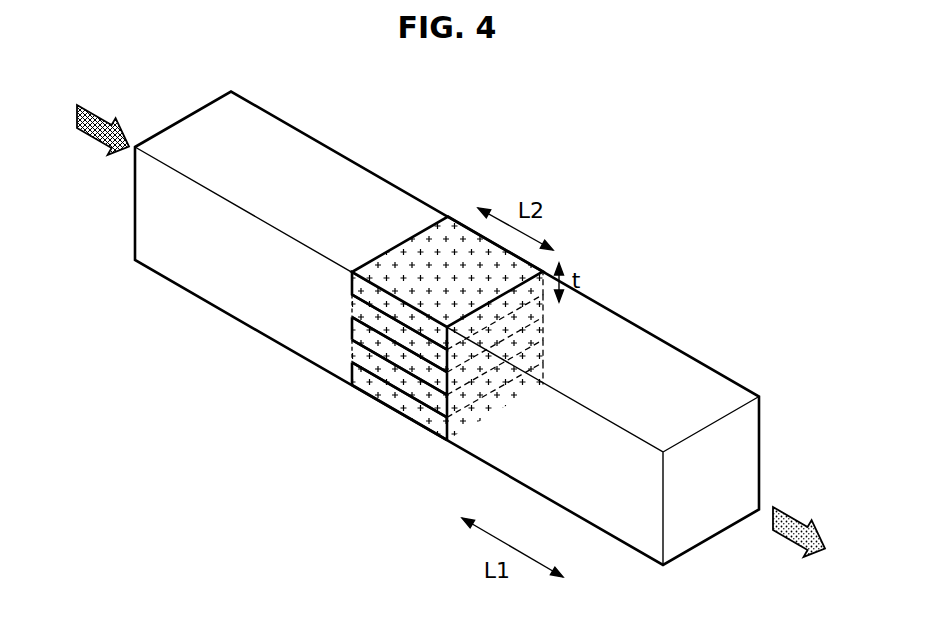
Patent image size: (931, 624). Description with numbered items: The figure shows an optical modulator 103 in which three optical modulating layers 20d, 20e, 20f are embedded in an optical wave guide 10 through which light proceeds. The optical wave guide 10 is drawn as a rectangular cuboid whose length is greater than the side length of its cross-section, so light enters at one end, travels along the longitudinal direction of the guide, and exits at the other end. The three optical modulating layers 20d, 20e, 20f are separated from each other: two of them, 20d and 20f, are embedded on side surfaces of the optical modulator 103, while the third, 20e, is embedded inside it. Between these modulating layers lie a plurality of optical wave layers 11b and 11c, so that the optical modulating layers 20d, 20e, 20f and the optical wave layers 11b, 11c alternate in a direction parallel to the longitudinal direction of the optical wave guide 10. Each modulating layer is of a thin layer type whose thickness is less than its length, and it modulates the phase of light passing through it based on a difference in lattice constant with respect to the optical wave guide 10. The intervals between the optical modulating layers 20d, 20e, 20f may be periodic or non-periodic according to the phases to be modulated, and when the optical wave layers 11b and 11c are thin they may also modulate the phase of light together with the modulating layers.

The optical modulator 103 is at (447, 329).
The optical wave guide 10 is at (249, 305).
The optical wave layer 11b is at (353, 307).
The optical wave layer 11c is at (357, 353).
The optical modulating layer 20d is at (390, 308).
The optical modulating layer 20e is at (410, 357).
The optical modulating layer 20f is at (435, 423).